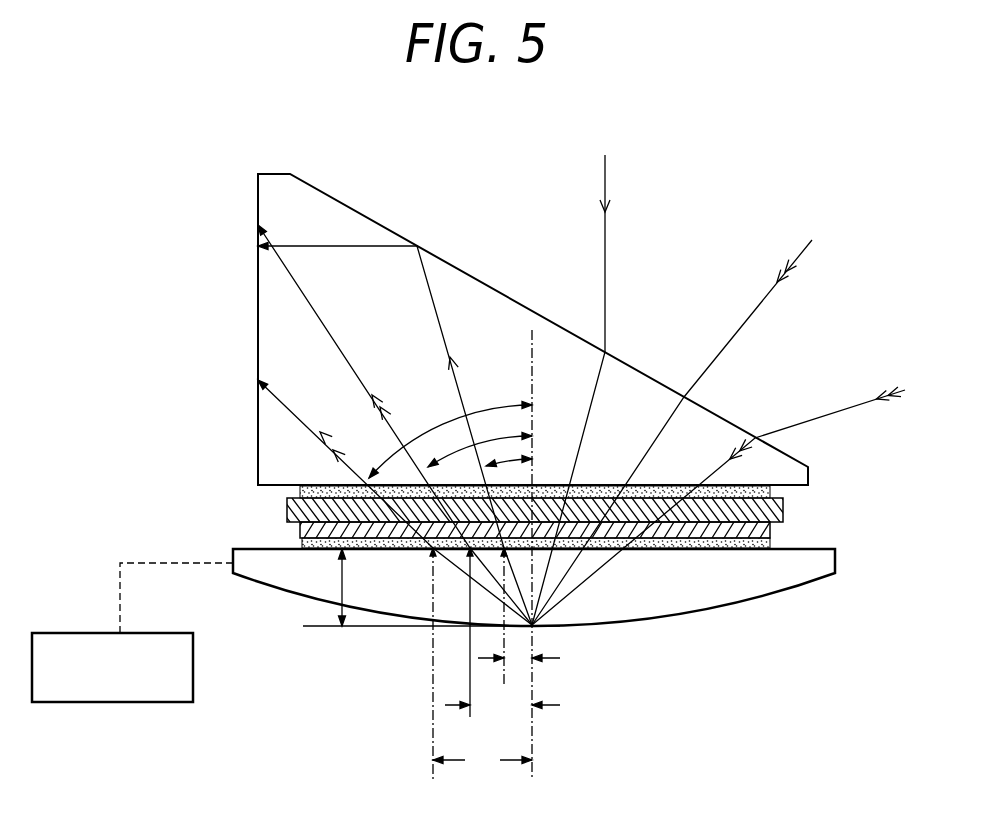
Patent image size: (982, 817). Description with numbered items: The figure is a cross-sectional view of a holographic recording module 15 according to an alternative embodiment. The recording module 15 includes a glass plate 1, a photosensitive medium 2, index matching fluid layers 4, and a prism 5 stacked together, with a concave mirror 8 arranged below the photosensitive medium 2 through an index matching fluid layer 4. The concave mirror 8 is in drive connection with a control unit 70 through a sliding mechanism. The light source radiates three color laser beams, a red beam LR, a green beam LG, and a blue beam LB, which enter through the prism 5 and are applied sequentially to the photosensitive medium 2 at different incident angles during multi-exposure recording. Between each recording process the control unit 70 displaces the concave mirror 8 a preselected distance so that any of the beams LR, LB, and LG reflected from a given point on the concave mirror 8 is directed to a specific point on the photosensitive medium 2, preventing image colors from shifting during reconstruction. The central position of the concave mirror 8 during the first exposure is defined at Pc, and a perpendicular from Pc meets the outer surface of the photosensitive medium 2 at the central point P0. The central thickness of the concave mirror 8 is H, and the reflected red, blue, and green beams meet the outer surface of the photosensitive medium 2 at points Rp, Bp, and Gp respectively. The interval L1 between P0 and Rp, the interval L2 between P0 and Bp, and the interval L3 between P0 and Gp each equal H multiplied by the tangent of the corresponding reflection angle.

The recording module 15 is at (220, 342).
The prism 5 is at (800, 460).
The index matching fluid layers 4 is at (772, 492).
The glass plate 1 is at (785, 508).
The photosensitive medium 2 is at (772, 535).
The concave mirror 8 is at (838, 568).
The control unit 70 is at (193, 690).
The red laser beam LR is at (605, 258).
The blue laser beam LB is at (743, 328).
The green laser beam LG is at (818, 420).
The central thickness of the concave mirror H is at (342, 573).
The intersection point of reflected green beam Gp is at (425, 550).
The intersection point of reflected blue beam Bp is at (466, 552).
The intersection point of reflected red beam Rp is at (552, 580).
The central point P0 is at (558, 553).
The central position of the concave mirror Pc is at (538, 630).
The interval L1 is at (519, 660).
The interval L2 is at (502, 707).
The interval L3 is at (482, 762).